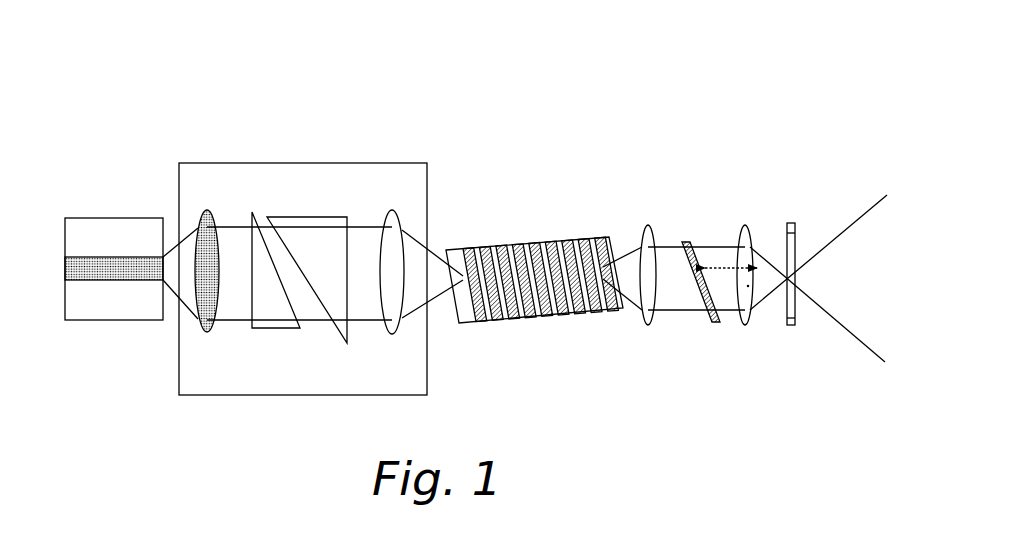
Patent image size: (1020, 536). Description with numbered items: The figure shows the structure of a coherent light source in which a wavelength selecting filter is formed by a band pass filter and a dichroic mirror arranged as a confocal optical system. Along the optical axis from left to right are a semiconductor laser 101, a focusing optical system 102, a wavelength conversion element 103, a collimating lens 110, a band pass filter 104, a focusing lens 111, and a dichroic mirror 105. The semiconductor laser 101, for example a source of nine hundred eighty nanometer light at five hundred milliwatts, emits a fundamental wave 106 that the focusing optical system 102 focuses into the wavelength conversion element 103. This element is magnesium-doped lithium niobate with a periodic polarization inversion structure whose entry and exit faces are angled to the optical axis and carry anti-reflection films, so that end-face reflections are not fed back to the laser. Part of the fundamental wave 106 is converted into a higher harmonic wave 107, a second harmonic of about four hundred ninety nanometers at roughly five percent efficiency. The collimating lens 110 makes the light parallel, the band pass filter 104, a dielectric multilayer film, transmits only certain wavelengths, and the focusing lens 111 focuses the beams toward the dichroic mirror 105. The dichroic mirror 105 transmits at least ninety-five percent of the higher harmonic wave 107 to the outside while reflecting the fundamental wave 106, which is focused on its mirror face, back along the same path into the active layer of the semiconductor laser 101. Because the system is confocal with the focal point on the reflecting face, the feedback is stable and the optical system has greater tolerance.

The semiconductor laser 101 is at (107, 227).
The focusing optical system 102 is at (332, 163).
The wavelength conversion element 103 is at (527, 245).
The band pass filter 104 is at (715, 323).
The dichroic mirror 105 is at (792, 227).
The fundamental wave 106 is at (748, 286).
The higher harmonic wave 107 is at (819, 278).
The coherent lens 110 is at (647, 226).
The focusing lens 111 is at (748, 225).